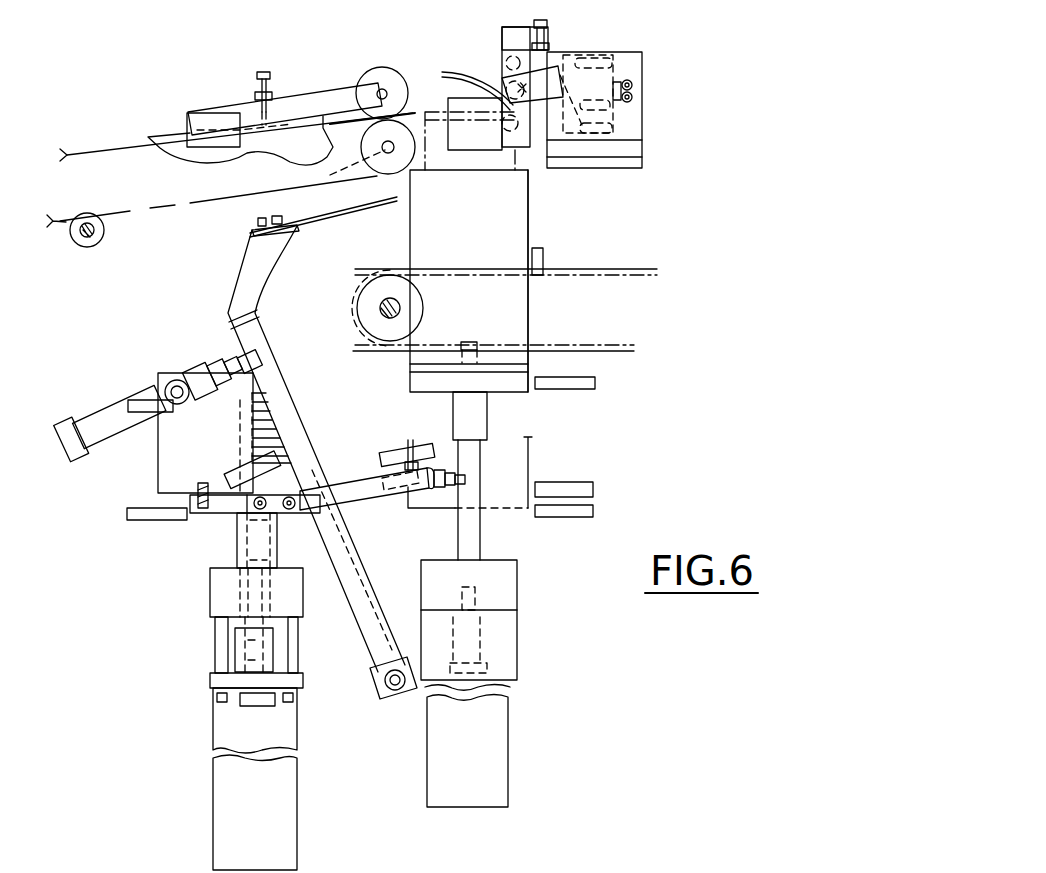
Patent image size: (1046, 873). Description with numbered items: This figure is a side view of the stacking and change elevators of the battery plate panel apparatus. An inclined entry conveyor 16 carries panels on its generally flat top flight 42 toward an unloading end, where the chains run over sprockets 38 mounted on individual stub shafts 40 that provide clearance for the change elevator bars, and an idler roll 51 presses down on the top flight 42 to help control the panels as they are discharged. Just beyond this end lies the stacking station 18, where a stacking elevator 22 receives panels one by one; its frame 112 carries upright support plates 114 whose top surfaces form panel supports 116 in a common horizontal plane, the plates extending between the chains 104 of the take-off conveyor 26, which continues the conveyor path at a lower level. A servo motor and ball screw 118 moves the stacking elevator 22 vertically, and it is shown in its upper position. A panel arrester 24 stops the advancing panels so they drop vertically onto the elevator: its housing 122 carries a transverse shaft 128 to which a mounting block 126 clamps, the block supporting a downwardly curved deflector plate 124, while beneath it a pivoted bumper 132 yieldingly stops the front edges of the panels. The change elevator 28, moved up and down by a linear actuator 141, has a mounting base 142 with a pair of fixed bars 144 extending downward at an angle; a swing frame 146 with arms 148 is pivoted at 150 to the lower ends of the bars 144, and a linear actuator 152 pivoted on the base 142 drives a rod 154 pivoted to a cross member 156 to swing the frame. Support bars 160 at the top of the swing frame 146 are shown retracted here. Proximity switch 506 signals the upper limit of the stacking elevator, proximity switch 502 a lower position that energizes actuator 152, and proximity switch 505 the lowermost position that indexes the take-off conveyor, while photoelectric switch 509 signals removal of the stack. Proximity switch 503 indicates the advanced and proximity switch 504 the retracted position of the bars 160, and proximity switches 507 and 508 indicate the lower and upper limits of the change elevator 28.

The entry conveyor 16 is at (168, 124).
The top flight 42 is at (93, 151).
The idler roll 51 is at (396, 68).
The stacking station 18 is at (423, 86).
The mounting block 126 is at (489, 73).
The deflector plate 124 is at (463, 60).
The transverse shaft 128 is at (537, 72).
The housing 122 is at (636, 53).
The panel arrester 24 is at (645, 88).
The sprockets 38 is at (216, 198).
The stub shafts 40 is at (385, 156).
The support bars 160 is at (346, 210).
The bumper 132 is at (484, 160).
The panel supports 116 is at (520, 156).
The support plates 114 is at (522, 224).
The chains 104 is at (454, 268).
The photoelectric switch 509 is at (544, 252).
The take-off conveyor 26 is at (634, 267).
The stacking elevator 22 is at (565, 316).
The rod 154 is at (220, 372).
The cross member 156 is at (265, 352).
The arms 148 is at (277, 368).
The proximity switch 508 is at (143, 395).
The linear actuator 152 is at (93, 412).
The frame 112 is at (413, 385).
The proximity switch 506 is at (596, 383).
The mounting base 142 is at (160, 458).
The proximity switch 504 is at (238, 466).
The swing frame 146 is at (318, 441).
The proximity switch 503 is at (428, 432).
The proximity switch 502 is at (596, 483).
The proximity switch 505 is at (598, 505).
The proximity switch 507 is at (128, 513).
The fixed bars 144 is at (303, 538).
The linear actuator 141 is at (237, 645).
The change elevator 28 is at (176, 712).
The pivot 150 is at (390, 700).
The servo motor and ball screw 118 is at (520, 640).